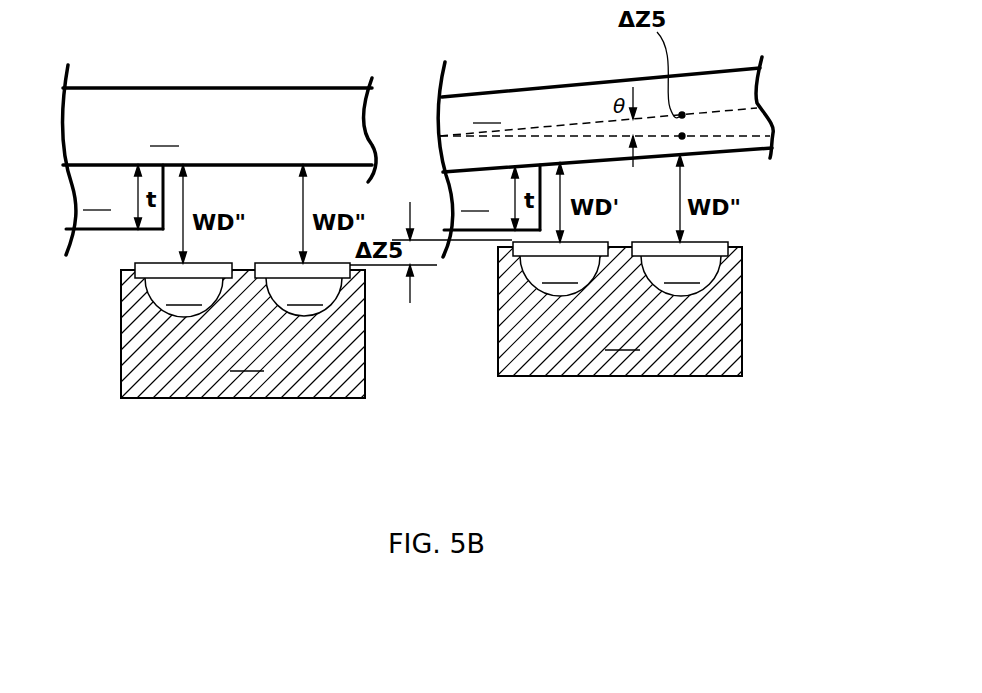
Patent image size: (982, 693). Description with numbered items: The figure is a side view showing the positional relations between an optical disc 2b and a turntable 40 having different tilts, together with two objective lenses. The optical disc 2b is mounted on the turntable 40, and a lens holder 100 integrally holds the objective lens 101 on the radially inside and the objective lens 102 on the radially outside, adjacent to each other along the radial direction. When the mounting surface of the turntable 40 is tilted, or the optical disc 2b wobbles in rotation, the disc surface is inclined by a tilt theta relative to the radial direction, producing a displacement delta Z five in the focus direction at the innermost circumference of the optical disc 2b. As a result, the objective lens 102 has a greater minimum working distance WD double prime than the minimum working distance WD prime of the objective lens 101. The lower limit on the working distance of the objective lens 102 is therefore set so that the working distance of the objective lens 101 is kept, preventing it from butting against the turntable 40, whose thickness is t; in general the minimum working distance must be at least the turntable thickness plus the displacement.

The optical disc 2b is at (417, 157).
The turntable 40 is at (303, 197).
The lens holder 100 is at (431, 322).
The objective lens 101 is at (371, 279).
The objective lens 102 is at (491, 279).